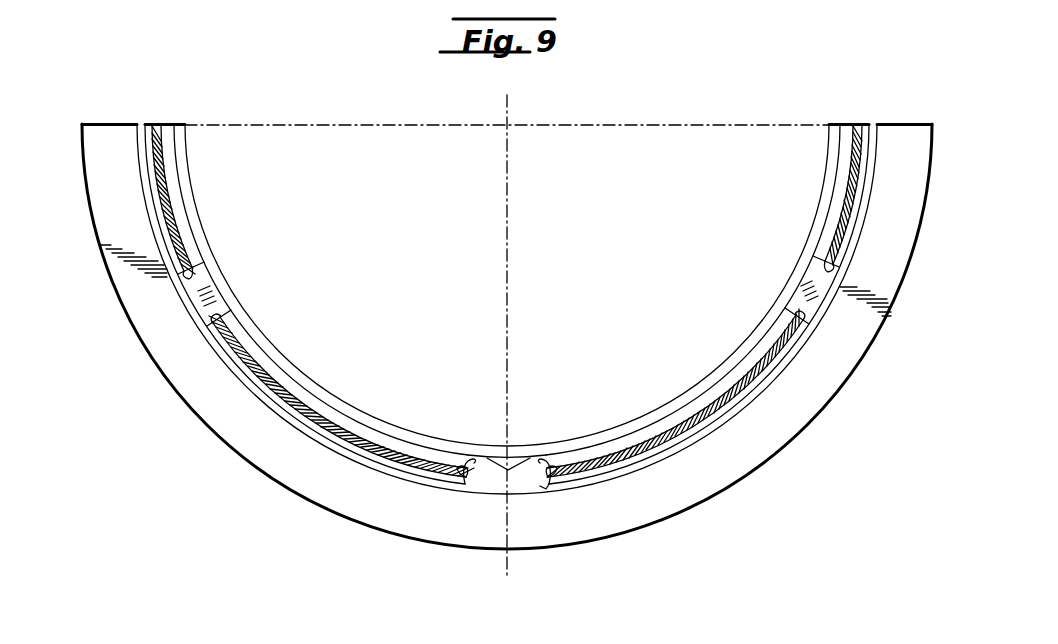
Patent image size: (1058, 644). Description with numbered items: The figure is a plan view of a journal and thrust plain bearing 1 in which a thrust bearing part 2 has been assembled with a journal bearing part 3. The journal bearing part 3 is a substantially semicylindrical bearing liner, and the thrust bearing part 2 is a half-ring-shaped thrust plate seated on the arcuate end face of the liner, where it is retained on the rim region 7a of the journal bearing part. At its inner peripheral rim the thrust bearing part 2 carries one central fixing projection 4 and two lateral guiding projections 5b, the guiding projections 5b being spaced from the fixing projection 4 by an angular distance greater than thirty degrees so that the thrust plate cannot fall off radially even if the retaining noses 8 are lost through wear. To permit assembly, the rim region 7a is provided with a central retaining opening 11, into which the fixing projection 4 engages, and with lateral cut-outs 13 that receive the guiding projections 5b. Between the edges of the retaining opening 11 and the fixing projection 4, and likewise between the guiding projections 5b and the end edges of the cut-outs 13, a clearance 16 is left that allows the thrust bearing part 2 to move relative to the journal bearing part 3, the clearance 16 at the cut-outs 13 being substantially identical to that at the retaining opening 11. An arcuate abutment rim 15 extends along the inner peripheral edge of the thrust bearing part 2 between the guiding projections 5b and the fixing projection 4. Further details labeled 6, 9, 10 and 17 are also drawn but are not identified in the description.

The journal and thrust plain bearing 1 is at (208, 487).
The thrust bearing part 2 is at (173, 394).
The journal bearing part 3 is at (361, 461).
The fixing projection 4 is at (521, 480).
The guiding projections 5b is at (203, 285).
The liner bridge 6 is at (521, 456).
The rim region 7a is at (634, 461).
The retaining noses 8 is at (482, 456).
The filler end 9 is at (556, 468).
The inner liner 10 is at (318, 378).
The retaining opening 11 is at (452, 480).
The cut-outs 13 is at (192, 257).
The abutment rim 15 is at (345, 428).
The clearance 16 is at (543, 484).
The filler start hook 17 is at (218, 321).